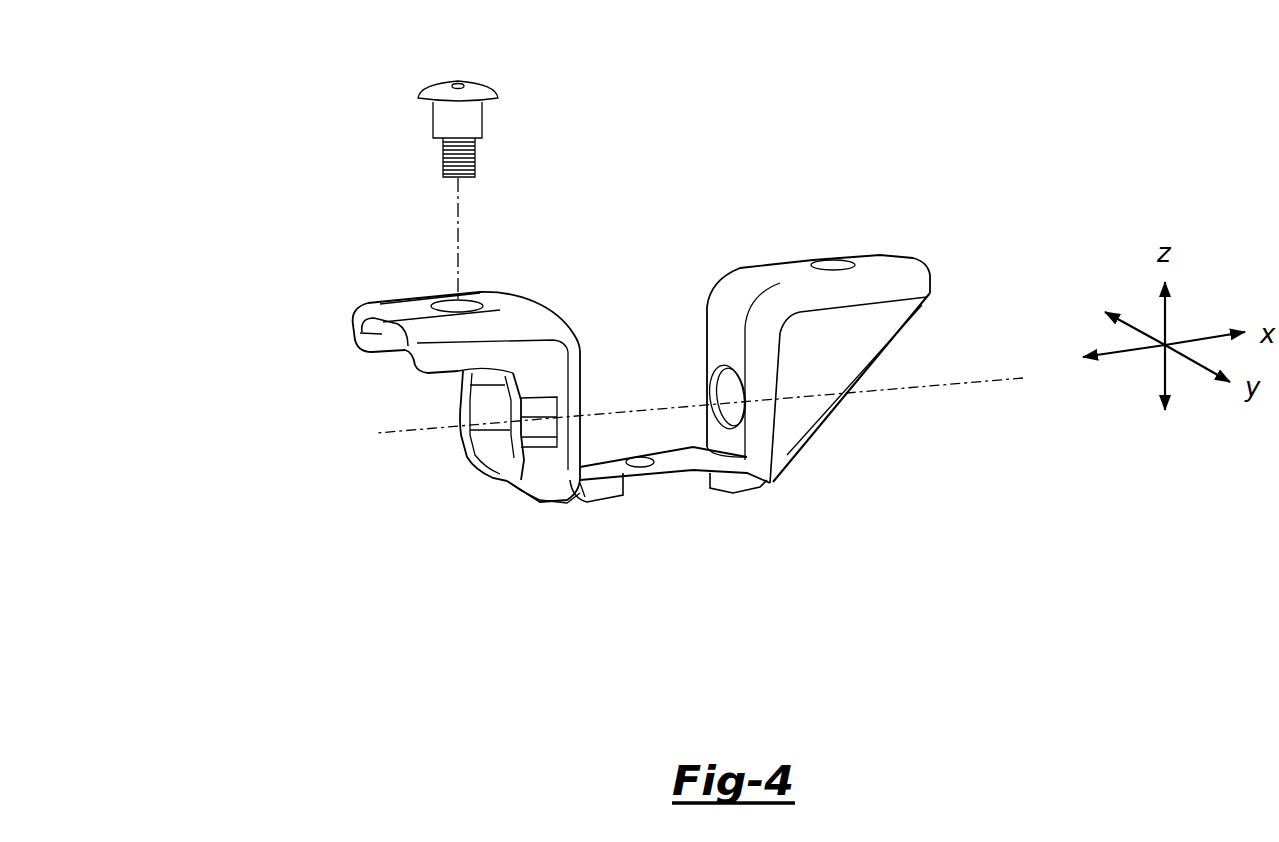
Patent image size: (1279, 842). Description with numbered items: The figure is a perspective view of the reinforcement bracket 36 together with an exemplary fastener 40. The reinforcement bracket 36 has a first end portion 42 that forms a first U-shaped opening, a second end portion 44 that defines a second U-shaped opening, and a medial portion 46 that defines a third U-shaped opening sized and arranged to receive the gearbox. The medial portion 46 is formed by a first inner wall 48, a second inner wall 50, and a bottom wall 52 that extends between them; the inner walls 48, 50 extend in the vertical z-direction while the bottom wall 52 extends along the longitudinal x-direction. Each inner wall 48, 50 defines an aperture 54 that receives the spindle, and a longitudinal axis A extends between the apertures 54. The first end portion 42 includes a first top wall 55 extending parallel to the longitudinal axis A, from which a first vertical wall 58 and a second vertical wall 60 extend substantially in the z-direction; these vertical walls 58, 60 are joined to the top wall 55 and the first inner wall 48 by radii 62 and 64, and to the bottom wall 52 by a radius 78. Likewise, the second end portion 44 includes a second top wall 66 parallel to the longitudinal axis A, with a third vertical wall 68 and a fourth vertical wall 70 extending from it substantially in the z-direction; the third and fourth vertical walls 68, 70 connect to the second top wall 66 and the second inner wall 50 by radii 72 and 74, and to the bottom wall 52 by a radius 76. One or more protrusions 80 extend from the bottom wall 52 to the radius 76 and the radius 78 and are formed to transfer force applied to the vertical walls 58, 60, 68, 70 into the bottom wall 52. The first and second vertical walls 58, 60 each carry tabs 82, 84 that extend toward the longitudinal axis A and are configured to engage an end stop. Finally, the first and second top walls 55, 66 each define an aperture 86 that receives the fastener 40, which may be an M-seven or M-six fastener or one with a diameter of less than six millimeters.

The reinforcement bracket 36 is at (146, 115).
The fastener 40 is at (452, 86).
The first end portion 42 is at (355, 300).
The second end portion 44 is at (930, 252).
The medial portion 46 is at (636, 510).
The first inner wall 48 is at (575, 356).
The second inner wall 50 is at (722, 322).
The bottom wall 52 is at (656, 492).
The aperture 54 is at (748, 422).
The first top wall 55 is at (407, 310).
The first vertical wall 58 is at (500, 353).
The second vertical wall 60 is at (352, 322).
The radius 62 is at (400, 350).
The radius 64 is at (553, 320).
The second top wall 66 is at (785, 265).
The third vertical wall 68 is at (885, 322).
The fourth vertical wall 70 is at (800, 265).
The radius 72 is at (760, 350).
The radius 74 is at (815, 290).
The radius 76 is at (777, 487).
The radius 78 is at (570, 507).
The protrusion 80 is at (598, 500).
The tab 82 is at (480, 470).
The tab 84 is at (478, 413).
The aperture 86 is at (445, 300).
The longitudinal axis A is at (960, 387).